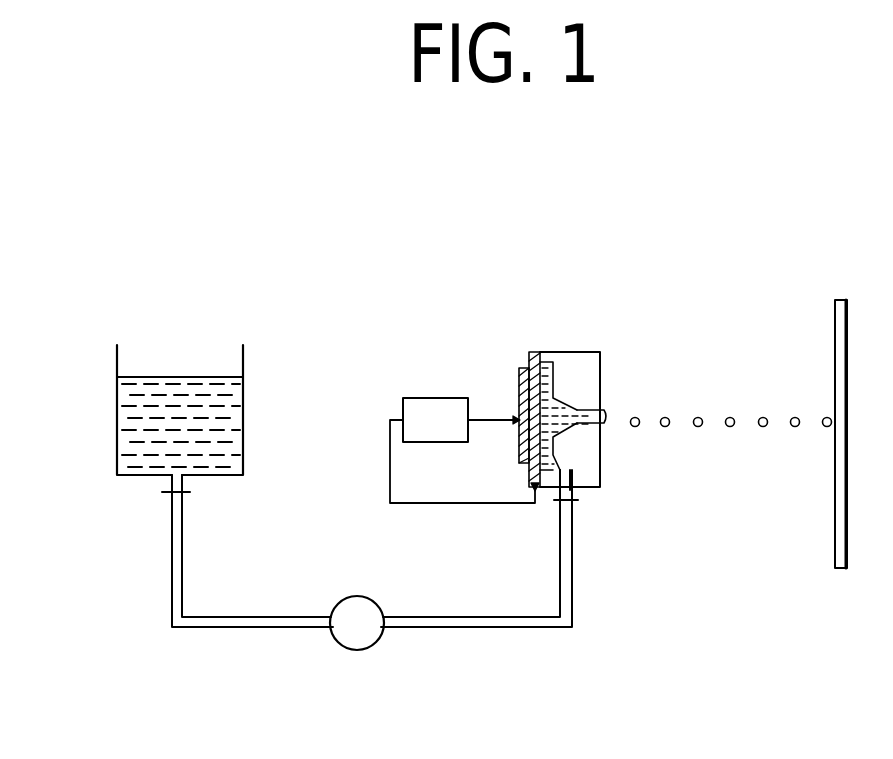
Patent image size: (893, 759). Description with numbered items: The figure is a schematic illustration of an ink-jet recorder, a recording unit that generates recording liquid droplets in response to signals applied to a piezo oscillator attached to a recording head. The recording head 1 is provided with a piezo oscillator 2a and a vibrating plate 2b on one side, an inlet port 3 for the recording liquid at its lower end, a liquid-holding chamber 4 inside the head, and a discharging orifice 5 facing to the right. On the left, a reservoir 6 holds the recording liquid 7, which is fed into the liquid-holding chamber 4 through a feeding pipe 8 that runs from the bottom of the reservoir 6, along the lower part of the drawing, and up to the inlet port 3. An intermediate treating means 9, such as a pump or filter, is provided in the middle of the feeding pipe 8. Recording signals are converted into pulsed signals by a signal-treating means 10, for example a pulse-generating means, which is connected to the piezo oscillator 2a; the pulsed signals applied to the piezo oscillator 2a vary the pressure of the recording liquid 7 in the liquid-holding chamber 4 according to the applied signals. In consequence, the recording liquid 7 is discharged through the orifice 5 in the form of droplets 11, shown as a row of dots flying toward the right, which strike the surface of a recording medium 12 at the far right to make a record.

The recording head 1 is at (581, 347).
The piezo oscillator 2a is at (520, 372).
The vibrating plate 2b is at (534, 352).
The inlet port 3 is at (565, 465).
The liquid-holding chamber 4 is at (558, 378).
The discharging orifice 5 is at (603, 420).
The reservoir 6 is at (117, 418).
The recording liquid 7 is at (117, 458).
The feeding pipe 8 is at (242, 630).
The intermediate treating means 9 is at (358, 651).
The signal-treating means 10 is at (406, 397).
The droplets 11 is at (730, 417).
The recording medium 12 is at (835, 545).